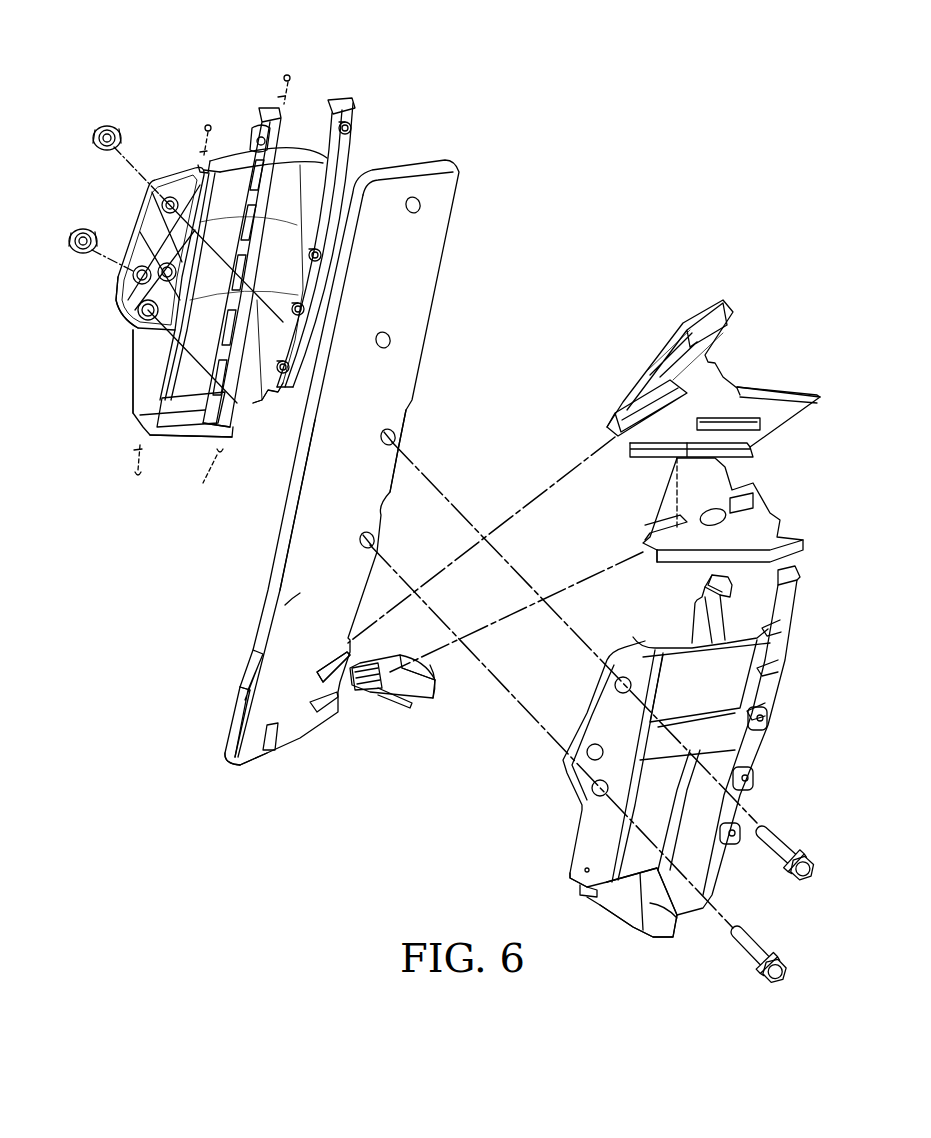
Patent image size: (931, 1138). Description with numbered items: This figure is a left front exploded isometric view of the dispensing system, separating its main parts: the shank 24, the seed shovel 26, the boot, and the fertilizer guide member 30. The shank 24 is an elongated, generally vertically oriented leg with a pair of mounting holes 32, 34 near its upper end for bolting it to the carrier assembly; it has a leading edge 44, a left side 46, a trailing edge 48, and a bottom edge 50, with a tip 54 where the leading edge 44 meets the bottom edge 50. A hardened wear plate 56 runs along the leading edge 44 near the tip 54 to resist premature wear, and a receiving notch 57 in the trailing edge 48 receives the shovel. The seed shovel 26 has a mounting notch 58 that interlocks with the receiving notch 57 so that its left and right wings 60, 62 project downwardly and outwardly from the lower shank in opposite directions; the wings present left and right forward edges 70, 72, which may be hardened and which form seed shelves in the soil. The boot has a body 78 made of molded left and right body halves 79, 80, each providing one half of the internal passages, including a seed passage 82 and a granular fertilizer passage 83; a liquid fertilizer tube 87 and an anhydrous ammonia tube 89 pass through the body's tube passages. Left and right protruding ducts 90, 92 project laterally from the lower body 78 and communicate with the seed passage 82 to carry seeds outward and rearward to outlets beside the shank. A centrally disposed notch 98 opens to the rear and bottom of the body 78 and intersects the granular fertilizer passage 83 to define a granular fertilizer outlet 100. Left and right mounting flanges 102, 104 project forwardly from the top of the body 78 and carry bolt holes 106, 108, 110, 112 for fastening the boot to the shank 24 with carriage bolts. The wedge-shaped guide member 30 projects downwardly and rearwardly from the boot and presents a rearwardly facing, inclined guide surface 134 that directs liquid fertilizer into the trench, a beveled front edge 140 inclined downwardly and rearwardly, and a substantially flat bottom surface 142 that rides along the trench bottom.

The shank 24 is at (462, 275).
The shovel 26 is at (687, 412).
The guide member 30 is at (440, 704).
The mounting hole 32 is at (420, 208).
The mounting hole 34 is at (392, 340).
The leading edge 44 is at (280, 563).
The left side 46 is at (300, 593).
The trailing edge 48 is at (398, 480).
The bottom edge 50 is at (260, 767).
The tip 54 is at (210, 775).
The wear plate 56 is at (236, 723).
The receiving notch 57 is at (352, 650).
The mounting notch 58 is at (607, 455).
The left wing 60 is at (788, 440).
The right wing 62 is at (617, 373).
The left forward edge 70 is at (652, 452).
The right forward edge 72 is at (615, 415).
The body 78 is at (108, 404).
The left body half 79 is at (548, 868).
The right body half 80 is at (108, 304).
The seed passage 82 is at (198, 295).
The granular fertilizer passage 83 is at (305, 128).
The liquid fertilizer tube 87 is at (280, 96).
The anhydrous ammonia tube 89 is at (203, 152).
The left protruding duct 90 is at (658, 940).
The right protruding duct 92 is at (182, 447).
The notch 98 is at (270, 412).
The granular fertilizer outlet 100 is at (250, 430).
The left mounting flange 102 is at (655, 782).
The right mounting flange 104 is at (130, 219).
The bolt hole 106 is at (598, 793).
The bolt hole 108 is at (628, 682).
The bolt hole 110 is at (148, 322).
The bolt hole 112 is at (166, 203).
The guide surface 134 is at (448, 680).
The beveled front edge 140 is at (383, 700).
The bottom surface 142 is at (436, 730).